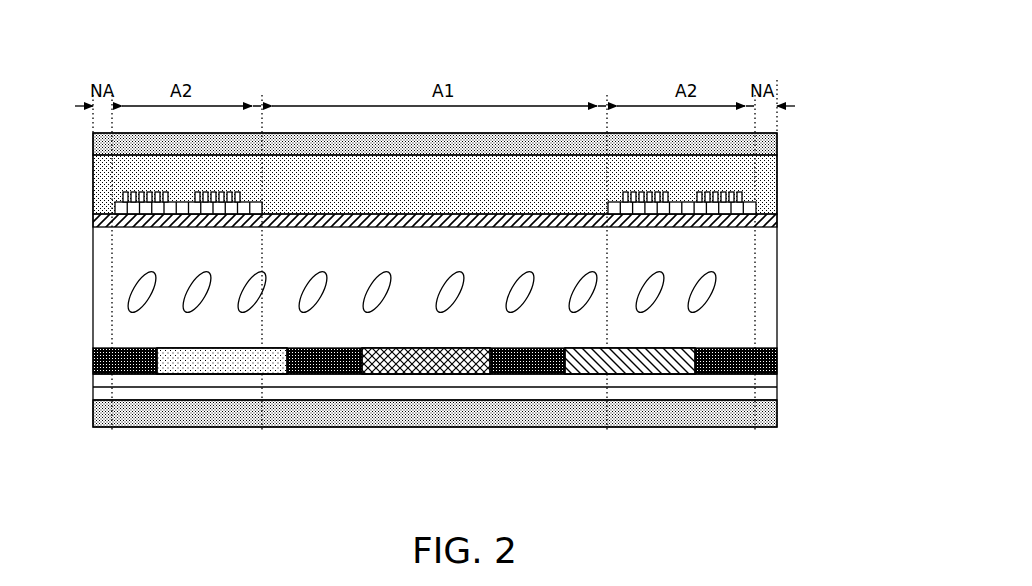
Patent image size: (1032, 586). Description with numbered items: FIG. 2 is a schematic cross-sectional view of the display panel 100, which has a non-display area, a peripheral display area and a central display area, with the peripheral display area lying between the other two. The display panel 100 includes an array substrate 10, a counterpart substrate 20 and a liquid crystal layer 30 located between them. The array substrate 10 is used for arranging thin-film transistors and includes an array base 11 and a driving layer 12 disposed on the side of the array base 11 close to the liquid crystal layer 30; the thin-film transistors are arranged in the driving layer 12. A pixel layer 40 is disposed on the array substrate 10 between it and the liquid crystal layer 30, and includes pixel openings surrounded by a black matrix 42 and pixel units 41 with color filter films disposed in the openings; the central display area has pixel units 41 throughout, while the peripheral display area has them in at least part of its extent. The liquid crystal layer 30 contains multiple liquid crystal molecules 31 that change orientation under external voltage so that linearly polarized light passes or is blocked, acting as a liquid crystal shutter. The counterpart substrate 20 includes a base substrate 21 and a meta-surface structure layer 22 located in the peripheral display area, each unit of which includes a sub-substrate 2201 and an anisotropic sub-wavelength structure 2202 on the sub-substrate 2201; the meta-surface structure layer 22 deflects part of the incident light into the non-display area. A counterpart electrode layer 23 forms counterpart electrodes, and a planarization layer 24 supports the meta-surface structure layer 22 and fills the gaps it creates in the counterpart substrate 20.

The display panel 100 is at (142, 56).
The array substrate 10 is at (511, 400).
The array base 11 is at (777, 415).
The driving layer 12 is at (777, 388).
The counterpart substrate 20 is at (474, 180).
The base substrate 21 is at (777, 140).
The meta-surface structure layer 22 is at (473, 192).
The sub-substrate 2201 is at (733, 207).
The sub-wavelength structure 2202 is at (742, 194).
The counterpart electrode layer 23 is at (777, 221).
The planarization layer 24 is at (777, 158).
The liquid crystal layer 30 is at (526, 292).
The liquid crystal molecules 31 is at (703, 297).
The pixel layer 40 is at (511, 393).
The pixel units 41 is at (642, 348).
The black matrix 42 is at (777, 358).